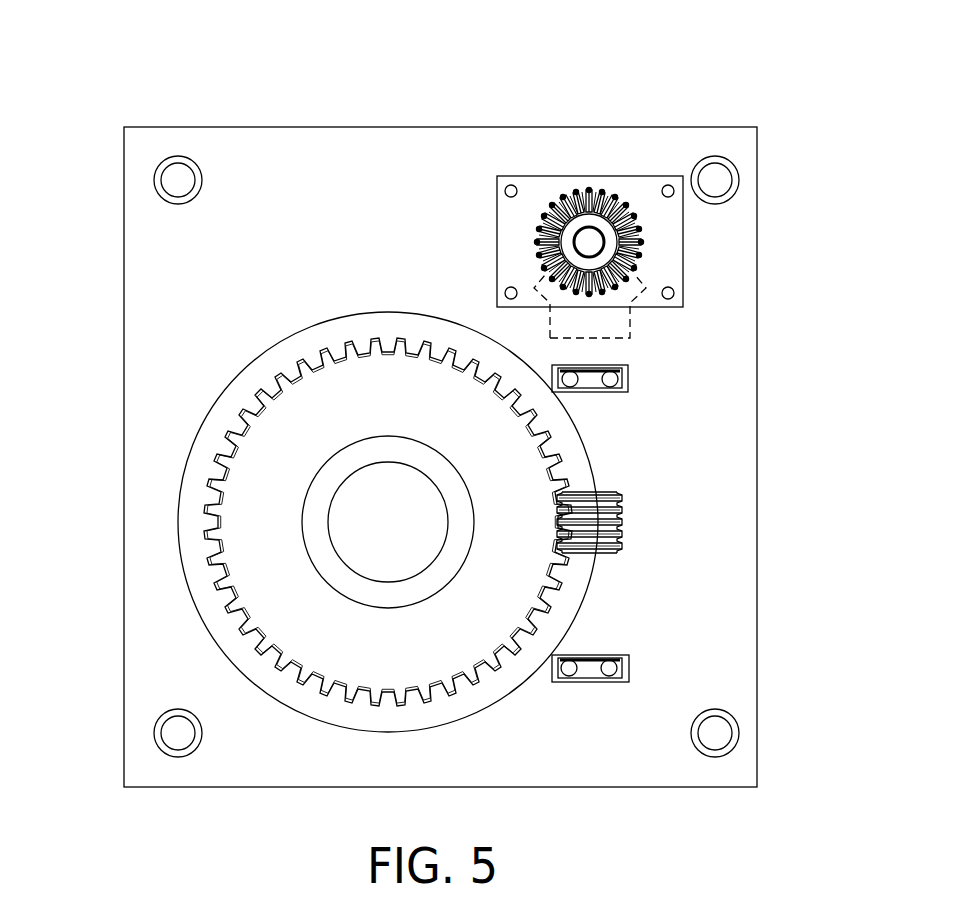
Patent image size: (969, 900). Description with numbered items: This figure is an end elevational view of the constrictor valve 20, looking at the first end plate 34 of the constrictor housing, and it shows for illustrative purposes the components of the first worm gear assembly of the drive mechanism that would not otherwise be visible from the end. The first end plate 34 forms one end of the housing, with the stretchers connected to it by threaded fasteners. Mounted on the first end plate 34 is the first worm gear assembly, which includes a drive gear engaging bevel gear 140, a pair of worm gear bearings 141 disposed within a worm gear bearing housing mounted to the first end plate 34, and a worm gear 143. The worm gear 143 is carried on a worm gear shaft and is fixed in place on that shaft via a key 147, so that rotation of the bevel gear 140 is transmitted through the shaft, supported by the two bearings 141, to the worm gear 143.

The drive assembly 20 is at (98, 106).
The first end plate 34 is at (215, 275).
The drive gear engaging bevel gear 140 is at (638, 323).
The worm gear bearings 141 is at (602, 385).
The worm gear 143 is at (622, 518).
The key 147 is at (582, 512).